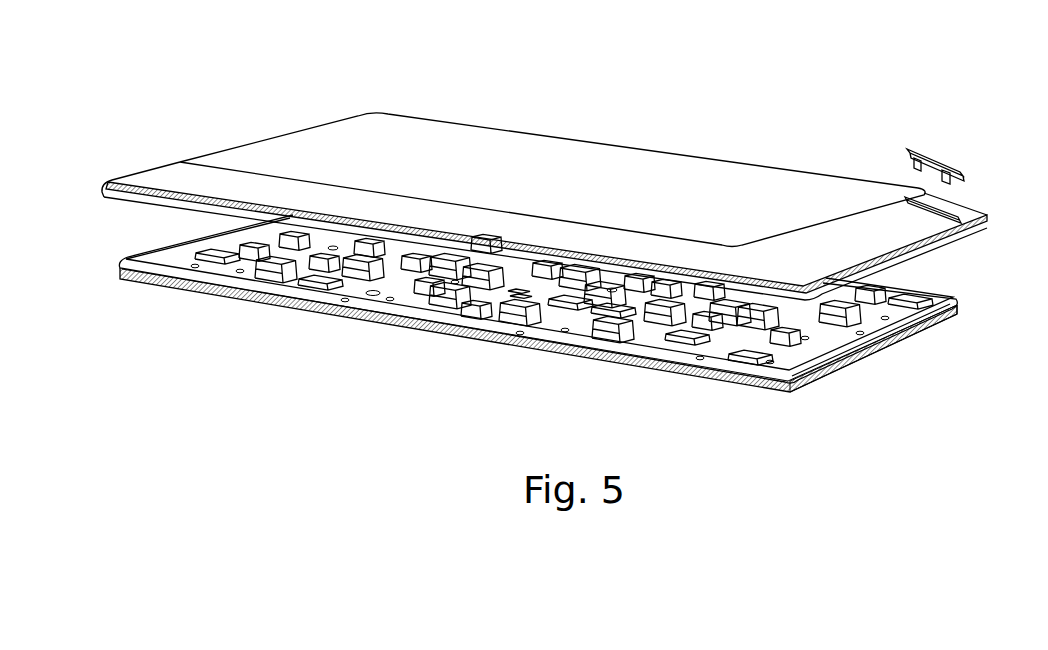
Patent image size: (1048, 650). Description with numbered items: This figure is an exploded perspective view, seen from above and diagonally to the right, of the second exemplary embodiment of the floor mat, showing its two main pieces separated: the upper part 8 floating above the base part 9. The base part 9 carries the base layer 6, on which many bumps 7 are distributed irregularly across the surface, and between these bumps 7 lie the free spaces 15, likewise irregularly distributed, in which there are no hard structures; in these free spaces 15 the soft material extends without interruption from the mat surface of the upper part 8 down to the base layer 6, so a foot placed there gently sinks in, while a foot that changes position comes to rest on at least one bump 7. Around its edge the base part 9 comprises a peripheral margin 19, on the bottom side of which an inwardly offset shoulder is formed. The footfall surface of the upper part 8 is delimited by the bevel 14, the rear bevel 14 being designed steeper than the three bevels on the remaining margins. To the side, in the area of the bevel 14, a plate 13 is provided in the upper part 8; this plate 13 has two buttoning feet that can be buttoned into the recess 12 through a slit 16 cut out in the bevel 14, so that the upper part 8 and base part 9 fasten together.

The base layer 6 is at (153, 253).
The bump 7 is at (457, 313).
The upper part 8 is at (625, 191).
The base part 9 is at (251, 297).
The recess 12 is at (917, 332).
The plate 13 is at (937, 149).
The bevel 14 is at (912, 228).
The free space 15 is at (511, 295).
The slit 16 is at (962, 206).
The peripheral margin 19 is at (843, 363).